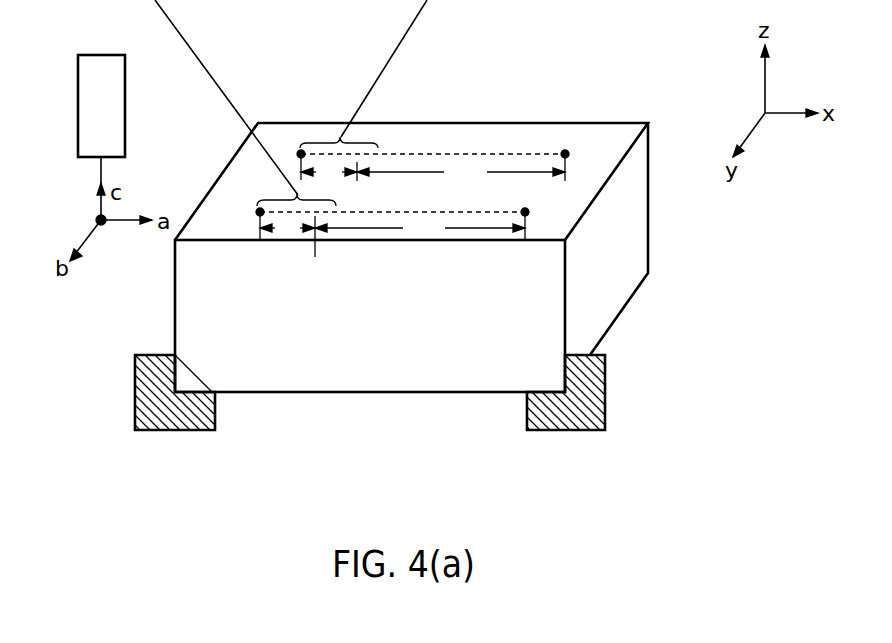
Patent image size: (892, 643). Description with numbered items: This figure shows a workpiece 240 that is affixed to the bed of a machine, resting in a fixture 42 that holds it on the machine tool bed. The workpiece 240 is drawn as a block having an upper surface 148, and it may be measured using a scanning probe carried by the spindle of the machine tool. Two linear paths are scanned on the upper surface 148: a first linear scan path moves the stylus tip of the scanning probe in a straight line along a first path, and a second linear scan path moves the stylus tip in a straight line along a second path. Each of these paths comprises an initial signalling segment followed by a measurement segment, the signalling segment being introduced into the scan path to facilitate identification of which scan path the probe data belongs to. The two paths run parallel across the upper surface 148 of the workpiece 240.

The fixture 42 is at (153, 428).
The upper surface 148 is at (622, 130).
The workpiece 240 is at (532, 123).